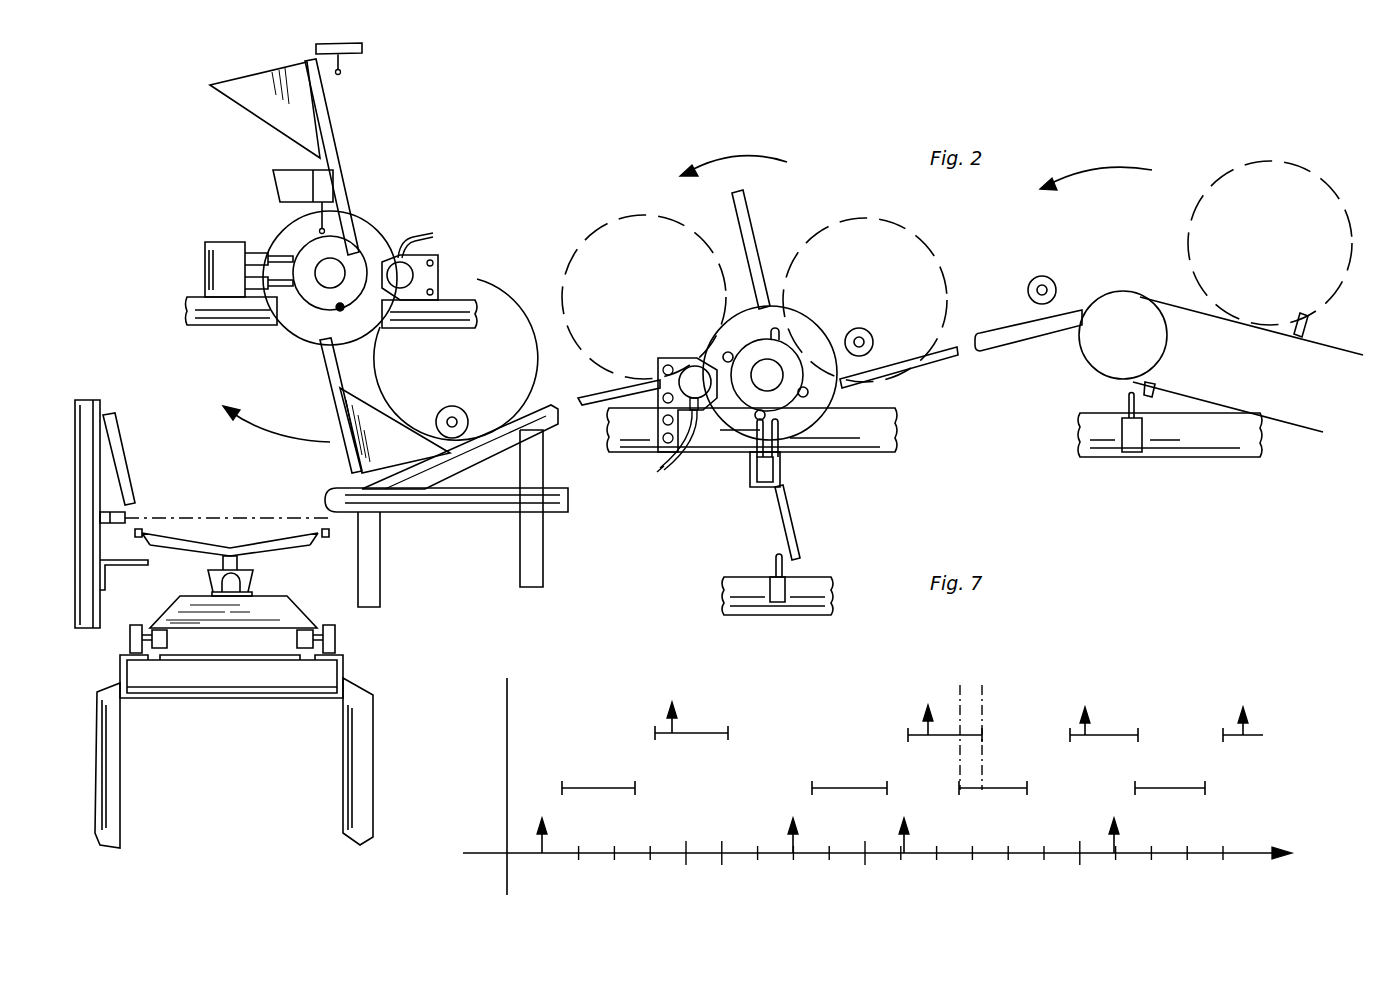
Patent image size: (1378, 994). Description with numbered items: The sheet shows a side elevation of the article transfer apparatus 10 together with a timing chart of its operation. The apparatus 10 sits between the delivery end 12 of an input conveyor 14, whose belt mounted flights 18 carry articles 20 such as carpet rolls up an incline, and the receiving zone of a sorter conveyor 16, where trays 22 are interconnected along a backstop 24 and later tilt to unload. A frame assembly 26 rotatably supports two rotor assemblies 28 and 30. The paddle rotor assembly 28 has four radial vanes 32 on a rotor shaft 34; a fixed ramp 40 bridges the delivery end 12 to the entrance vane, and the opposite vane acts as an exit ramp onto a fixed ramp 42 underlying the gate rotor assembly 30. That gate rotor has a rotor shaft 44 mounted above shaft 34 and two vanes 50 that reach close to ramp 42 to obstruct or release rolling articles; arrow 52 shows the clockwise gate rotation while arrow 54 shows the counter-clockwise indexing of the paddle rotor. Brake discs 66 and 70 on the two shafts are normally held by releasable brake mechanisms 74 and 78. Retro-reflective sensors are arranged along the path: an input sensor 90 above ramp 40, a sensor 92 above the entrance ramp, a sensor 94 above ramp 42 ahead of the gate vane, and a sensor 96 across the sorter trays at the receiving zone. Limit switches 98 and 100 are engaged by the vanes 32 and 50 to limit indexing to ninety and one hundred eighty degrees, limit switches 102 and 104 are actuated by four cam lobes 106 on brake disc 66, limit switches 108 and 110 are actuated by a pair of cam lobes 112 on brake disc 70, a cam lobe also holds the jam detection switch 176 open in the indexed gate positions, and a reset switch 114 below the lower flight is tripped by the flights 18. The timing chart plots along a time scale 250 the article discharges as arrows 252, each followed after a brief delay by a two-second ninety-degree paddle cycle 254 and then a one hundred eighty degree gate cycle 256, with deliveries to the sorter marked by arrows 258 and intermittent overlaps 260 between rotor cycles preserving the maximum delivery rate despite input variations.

In FIG. 2, the article transfer apparatus 10 is at (861, 90).
In FIG. 2, the delivery end 12 is at (1118, 294).
In FIG. 2, the input conveyor 14 is at (1216, 395).
In FIG. 2, the sorter conveyor 16 is at (234, 670).
In FIG. 2, the belt mounted flights 18 is at (1094, 385).
In FIG. 2, the articles 20 is at (587, 225).
In FIG. 2, the trays 22 is at (185, 533).
In FIG. 2, the backstop 24 is at (119, 431).
In FIG. 2, the frame assembly 26 is at (630, 460).
In FIG. 2, the rotor assembly 28 is at (818, 168).
In FIG. 2, the rotor assembly 30 is at (360, 255).
In FIG. 2, the vanes 32 is at (752, 216).
In FIG. 2, the rotor shaft 34 is at (772, 372).
In FIG. 2, the fixed ramp 40 is at (1025, 328).
In FIG. 2, the fixed ramp 42 is at (500, 455).
In FIG. 2, the rotor shaft 44 is at (333, 266).
In FIG. 2, the vanes 50 is at (330, 117).
In FIG. 2, the arrow 52 is at (293, 447).
In FIG. 2, the arrow 54 is at (750, 157).
In FIG. 2, the brake disc 66 is at (775, 318).
In FIG. 2, the brake disc 70 is at (378, 237).
In FIG. 2, the releasable brake mechanism 74 is at (661, 358).
In FIG. 2, the releasable brake mechanism 78 is at (422, 259).
In FIG. 2, the input sensor 90 is at (1045, 275).
In FIG. 2, the sensor 92 is at (868, 334).
In FIG. 2, the sensor 94 is at (462, 411).
In FIG. 2, the sensor 96 is at (114, 510).
In FIG. 2, the limit switch 98 is at (773, 574).
In FIG. 2, the limit switch 100 is at (343, 62).
In FIG. 2, the limit switch 102 is at (781, 437).
In FIG. 2, the limit switch 104 is at (753, 440).
In FIG. 2, the cam lobes 106 is at (810, 389).
In FIG. 2, the limit switch 108 is at (277, 292).
In FIG. 2, the limit switch 110 is at (282, 258).
In FIG. 2, the cam lobes 112 is at (341, 310).
In FIG. 2, the reset switch 114 is at (1137, 445).
In FIG. 2, the jam detection switch 176 is at (293, 170).
In FIG. 7, the time scale 250 is at (1070, 857).
In FIG. 7, the arrows 252 is at (540, 833).
In FIG. 7, the 90° rotational cycle 254 is at (577, 788).
In FIG. 7, the 180° cycle 256 is at (697, 732).
In FIG. 7, the arrows 258 is at (1087, 722).
In FIG. 7, the intermittent overlaps 260 is at (930, 693).